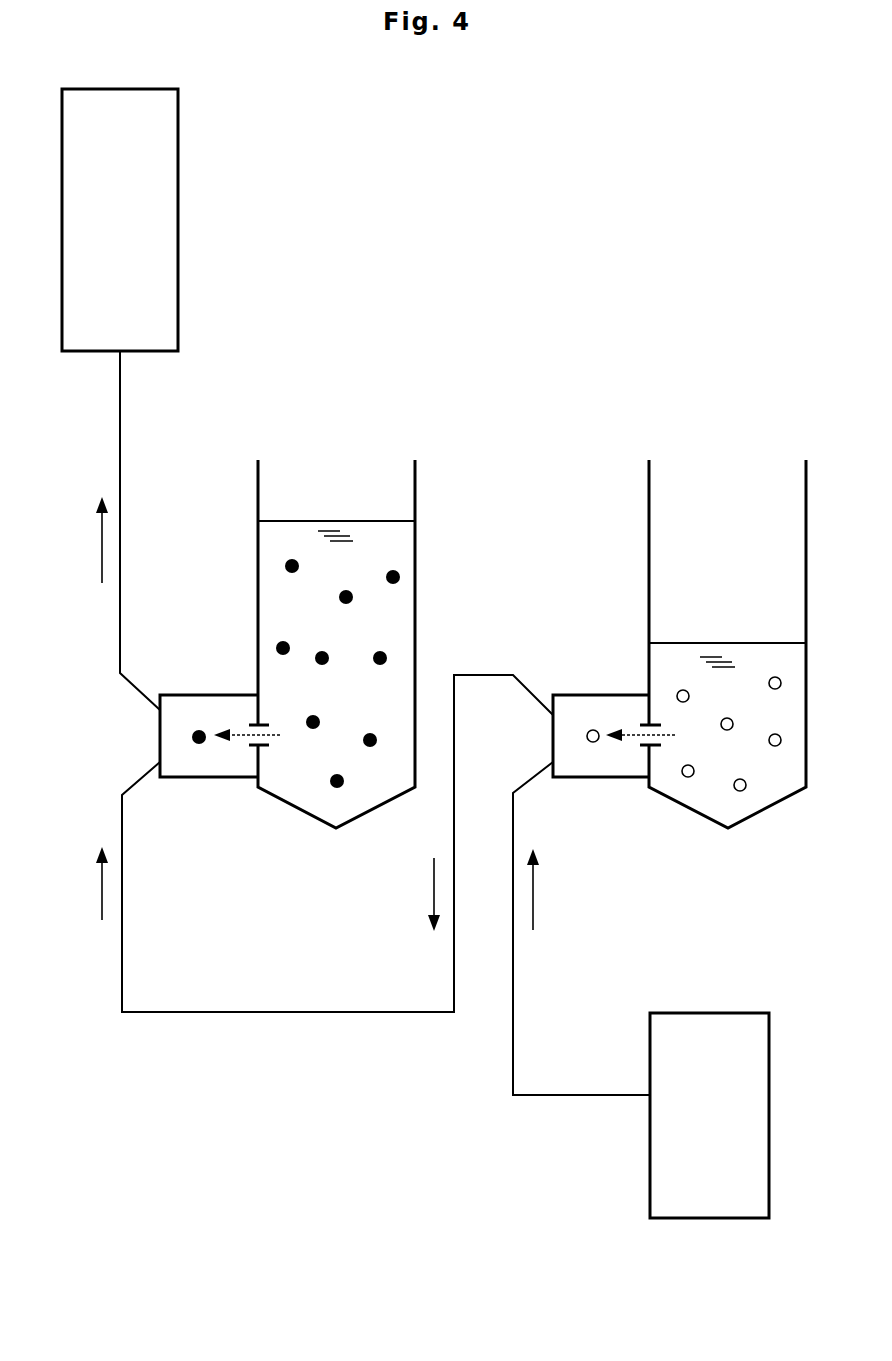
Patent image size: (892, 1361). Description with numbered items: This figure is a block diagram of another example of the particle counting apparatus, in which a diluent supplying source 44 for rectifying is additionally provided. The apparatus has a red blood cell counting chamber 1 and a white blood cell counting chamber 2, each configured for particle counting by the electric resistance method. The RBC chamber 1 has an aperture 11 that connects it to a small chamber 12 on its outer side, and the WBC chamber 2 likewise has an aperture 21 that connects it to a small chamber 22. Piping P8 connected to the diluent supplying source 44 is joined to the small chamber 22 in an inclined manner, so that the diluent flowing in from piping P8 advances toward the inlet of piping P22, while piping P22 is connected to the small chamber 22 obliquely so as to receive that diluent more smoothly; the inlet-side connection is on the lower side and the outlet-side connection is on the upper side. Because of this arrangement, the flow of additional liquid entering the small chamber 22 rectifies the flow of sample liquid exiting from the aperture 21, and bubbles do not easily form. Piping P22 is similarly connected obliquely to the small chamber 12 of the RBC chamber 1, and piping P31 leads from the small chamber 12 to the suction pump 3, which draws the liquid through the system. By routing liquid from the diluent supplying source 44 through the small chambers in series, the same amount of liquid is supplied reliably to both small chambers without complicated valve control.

The suction pump 3 is at (165, 185).
The piping P31 is at (124, 408).
The red blood cell counting chamber 1 is at (258, 623).
The small chamber 12 is at (183, 778).
The aperture 11 is at (250, 747).
The piping P22 is at (283, 1013).
The white blood cell counting chamber 2 is at (649, 620).
The small chamber 22 is at (575, 778).
The aperture 21 is at (643, 747).
The piping P8 is at (510, 1031).
The diluent supplying source 44 is at (665, 1137).